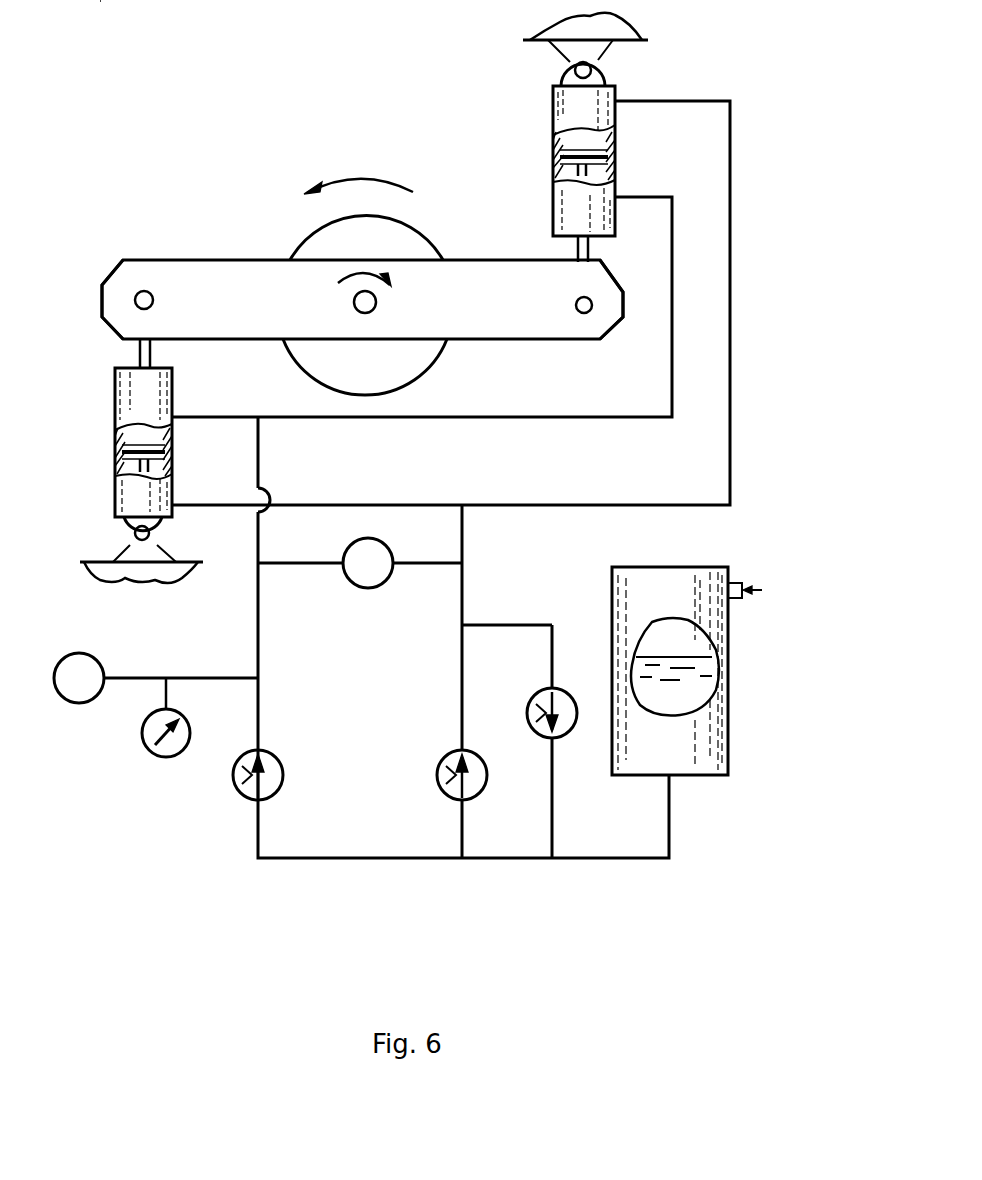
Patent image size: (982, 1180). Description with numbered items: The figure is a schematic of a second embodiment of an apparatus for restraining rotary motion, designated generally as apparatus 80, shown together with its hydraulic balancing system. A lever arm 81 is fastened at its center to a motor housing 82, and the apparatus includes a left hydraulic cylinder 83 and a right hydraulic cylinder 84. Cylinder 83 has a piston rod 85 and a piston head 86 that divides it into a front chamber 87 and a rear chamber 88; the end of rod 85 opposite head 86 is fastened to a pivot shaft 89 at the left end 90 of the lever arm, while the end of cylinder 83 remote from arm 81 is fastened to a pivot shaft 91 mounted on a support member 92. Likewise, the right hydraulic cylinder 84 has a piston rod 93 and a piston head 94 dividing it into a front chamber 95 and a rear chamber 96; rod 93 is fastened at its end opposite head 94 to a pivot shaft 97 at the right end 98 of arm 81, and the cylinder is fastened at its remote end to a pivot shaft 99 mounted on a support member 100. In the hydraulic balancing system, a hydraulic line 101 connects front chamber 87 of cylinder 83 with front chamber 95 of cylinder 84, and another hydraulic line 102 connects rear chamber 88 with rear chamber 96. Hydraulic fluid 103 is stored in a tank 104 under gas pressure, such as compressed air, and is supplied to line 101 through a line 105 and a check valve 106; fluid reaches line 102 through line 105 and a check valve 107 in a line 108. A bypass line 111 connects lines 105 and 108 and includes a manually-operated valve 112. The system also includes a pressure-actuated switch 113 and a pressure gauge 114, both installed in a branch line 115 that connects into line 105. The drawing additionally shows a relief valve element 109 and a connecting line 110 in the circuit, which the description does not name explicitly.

The apparatus for restraining rotary motion 80 is at (160, 133).
The lever arm 81 is at (253, 262).
The motor housing 82 is at (394, 222).
The left hydraulic cylinder 83 is at (128, 400).
The right hydraulic cylinder 84 is at (568, 110).
The piston rod 85 is at (135, 355).
The piston head 86 is at (172, 470).
The front chamber 87 is at (128, 440).
The rear chamber 88 is at (125, 468).
The pivot shaft 89 is at (146, 294).
The left end 90 is at (110, 278).
The pivot shaft 91 is at (135, 535).
The support member 92 is at (118, 595).
The piston rod 93 is at (578, 248).
The piston head 94 is at (610, 174).
The front chamber 95 is at (562, 176).
The rear chamber 96 is at (603, 140).
The pivot shaft 97 is at (583, 312).
The right end 98 is at (605, 277).
The pivot shaft 99 is at (592, 64).
The support member 100 is at (606, 20).
The hydraulic line 101 is at (651, 186).
The hydraulic line 102 is at (732, 282).
The hydraulic fluid 103 is at (690, 694).
The tank 104 is at (728, 748).
The line 105 is at (258, 605).
The check valve 106 is at (283, 778).
The check valve 107 is at (445, 800).
The line 108 is at (460, 670).
The relief valve 109 is at (540, 688).
The line 110 is at (552, 810).
The bypass line 111 is at (328, 568).
The manually-operated valve 112 is at (380, 540).
The pressure-actuated switch 113 is at (100, 703).
The pressure gauge 114 is at (148, 752).
The branch line 115 is at (222, 678).